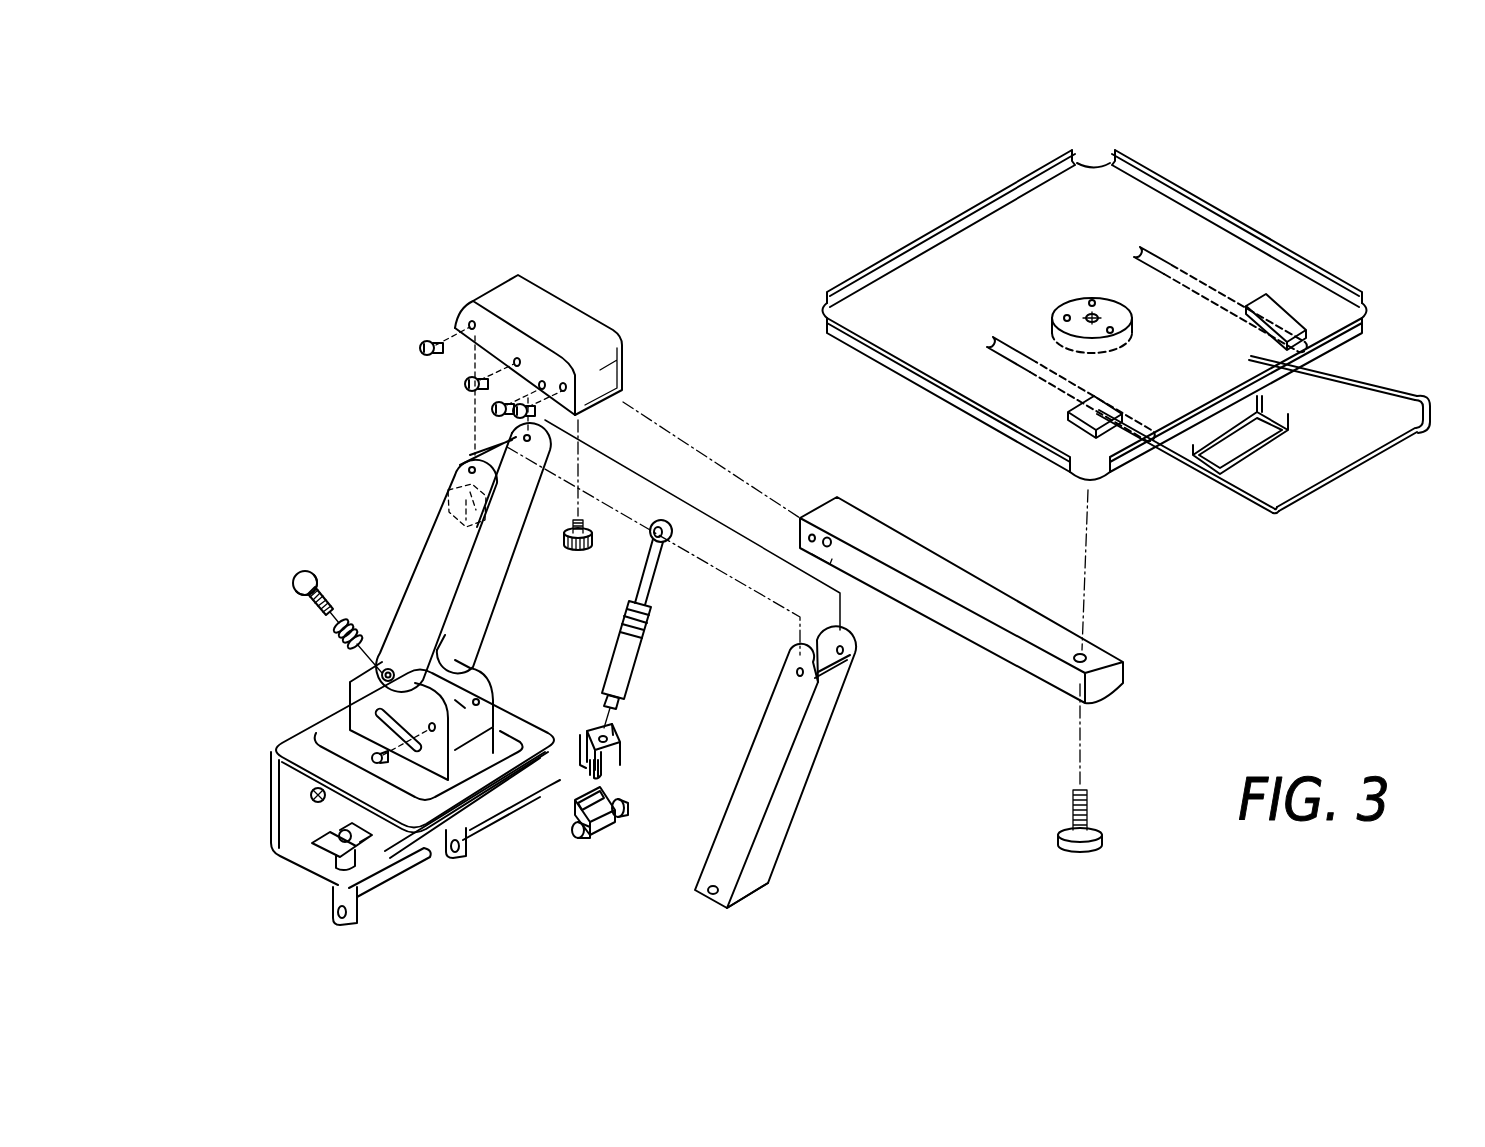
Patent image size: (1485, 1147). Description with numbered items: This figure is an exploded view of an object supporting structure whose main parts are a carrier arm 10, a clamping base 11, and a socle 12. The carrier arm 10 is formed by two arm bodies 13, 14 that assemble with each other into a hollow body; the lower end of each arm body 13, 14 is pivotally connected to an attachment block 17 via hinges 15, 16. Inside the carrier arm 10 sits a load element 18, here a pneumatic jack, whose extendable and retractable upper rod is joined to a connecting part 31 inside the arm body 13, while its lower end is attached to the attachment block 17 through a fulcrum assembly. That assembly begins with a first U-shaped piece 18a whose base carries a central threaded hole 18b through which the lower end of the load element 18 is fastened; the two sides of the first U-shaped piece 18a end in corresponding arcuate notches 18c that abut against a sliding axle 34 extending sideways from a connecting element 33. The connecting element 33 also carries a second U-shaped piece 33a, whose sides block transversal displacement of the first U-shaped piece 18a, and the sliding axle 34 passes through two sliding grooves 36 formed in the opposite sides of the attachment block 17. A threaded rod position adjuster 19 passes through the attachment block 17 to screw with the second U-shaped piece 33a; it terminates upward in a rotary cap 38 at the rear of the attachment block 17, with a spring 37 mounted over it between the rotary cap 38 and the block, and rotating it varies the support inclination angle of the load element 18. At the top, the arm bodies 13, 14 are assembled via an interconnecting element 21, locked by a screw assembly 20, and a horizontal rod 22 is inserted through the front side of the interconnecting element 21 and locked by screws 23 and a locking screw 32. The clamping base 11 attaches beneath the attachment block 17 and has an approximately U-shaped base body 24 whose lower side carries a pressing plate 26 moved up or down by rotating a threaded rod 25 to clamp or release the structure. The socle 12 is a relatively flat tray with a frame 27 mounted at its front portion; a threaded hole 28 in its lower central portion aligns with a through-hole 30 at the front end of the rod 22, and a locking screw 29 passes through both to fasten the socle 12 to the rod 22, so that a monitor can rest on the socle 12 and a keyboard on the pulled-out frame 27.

The carrier arm 10 is at (363, 570).
The clamping base 11 is at (363, 800).
The socle 12 is at (1130, 192).
The arm body 13 is at (432, 538).
The arm body 14 is at (830, 712).
The hinge 15 is at (380, 680).
The hinge 16 is at (371, 758).
The attachment block 17 is at (350, 705).
The load element 18 is at (634, 662).
The first U-shaped piece 18a is at (618, 745).
The threaded hole 18b is at (610, 736).
The arcuate notches 18c is at (600, 772).
The threaded rod position adjuster 19 is at (318, 605).
The screw assembly 20 is at (464, 386).
The interconnecting element 21 is at (557, 300).
The horizontal rod 22 is at (897, 585).
The screws 23 is at (513, 414).
The base body 24 is at (270, 833).
The threaded rod 25 is at (333, 918).
The pressing plate 26 is at (318, 843).
The frame 27 is at (1350, 440).
The threaded hole 28 is at (1092, 300).
The locking screw 29 is at (1077, 850).
The through-hole 30 is at (1085, 655).
The connecting part 31 is at (460, 510).
The locking screw 32 is at (583, 552).
The connecting element 33 is at (626, 814).
The second U-shaped piece 33a is at (575, 804).
The sliding axle 34 is at (578, 838).
The sliding grooves 36 is at (383, 722).
The spring 37 is at (336, 640).
The rotary cap 38 is at (292, 583).